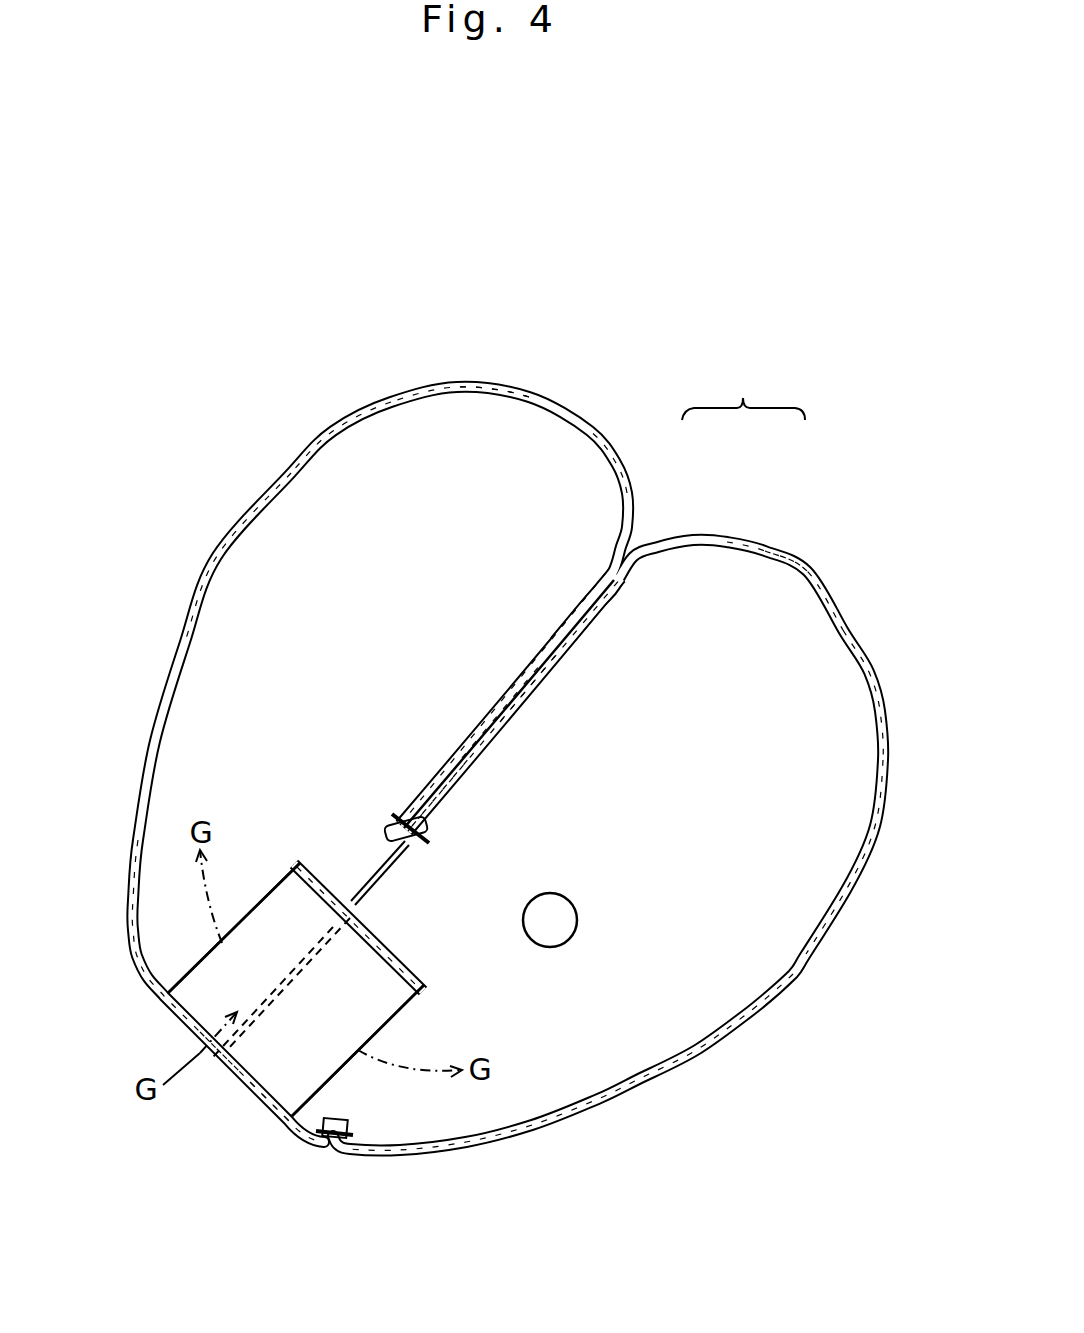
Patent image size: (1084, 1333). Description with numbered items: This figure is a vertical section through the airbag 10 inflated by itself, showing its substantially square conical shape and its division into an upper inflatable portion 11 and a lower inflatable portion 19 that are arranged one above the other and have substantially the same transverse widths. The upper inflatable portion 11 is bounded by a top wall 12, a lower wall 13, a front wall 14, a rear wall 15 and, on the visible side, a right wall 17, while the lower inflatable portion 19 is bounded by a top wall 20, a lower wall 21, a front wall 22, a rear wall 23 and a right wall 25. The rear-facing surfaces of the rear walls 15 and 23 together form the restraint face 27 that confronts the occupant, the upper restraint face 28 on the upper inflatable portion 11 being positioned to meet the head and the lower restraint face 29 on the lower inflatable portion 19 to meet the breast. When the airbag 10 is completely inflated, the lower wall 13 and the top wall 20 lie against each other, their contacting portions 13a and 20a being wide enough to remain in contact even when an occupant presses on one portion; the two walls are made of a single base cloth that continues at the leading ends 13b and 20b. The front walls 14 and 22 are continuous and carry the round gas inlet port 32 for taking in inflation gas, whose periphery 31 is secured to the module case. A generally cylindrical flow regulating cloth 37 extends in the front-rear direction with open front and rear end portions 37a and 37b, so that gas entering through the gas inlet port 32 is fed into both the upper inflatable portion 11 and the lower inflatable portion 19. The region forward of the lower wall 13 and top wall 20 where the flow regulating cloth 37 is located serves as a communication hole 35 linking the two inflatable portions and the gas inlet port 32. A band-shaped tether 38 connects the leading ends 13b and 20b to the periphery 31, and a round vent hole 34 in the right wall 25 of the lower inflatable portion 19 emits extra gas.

The airbag 10 is at (653, 397).
The upper inflatable portion 11 is at (410, 378).
The top wall 12 is at (213, 553).
The lower wall 13 is at (612, 584).
The contacting portion 13a is at (500, 722).
The leading end 13b is at (400, 817).
The front wall 14 is at (130, 948).
The rear wall 15 is at (490, 386).
The right wall 17 is at (320, 493).
The lower inflatable portion 19 is at (808, 570).
The top wall 20 is at (622, 592).
The contacting portion 20a is at (528, 706).
The leading end 20b is at (413, 840).
The lower wall 21 is at (627, 1100).
The front wall 22 is at (313, 1147).
The rear wall 23 is at (873, 675).
The right wall 25 is at (743, 952).
The restraint face 27 is at (743, 391).
The upper restraint face 28 is at (615, 447).
The lower restraint face 29 is at (773, 553).
The periphery of the gas inlet port 31 is at (270, 1112).
The gas inlet port 32 is at (220, 1062).
The vent hole 34 is at (560, 907).
The communication hole 35 is at (357, 893).
The flow regulating cloth 37 is at (428, 1006).
The front end portion 37a is at (277, 903).
The rear end portion 37b is at (317, 1073).
The tether 38 is at (374, 883).